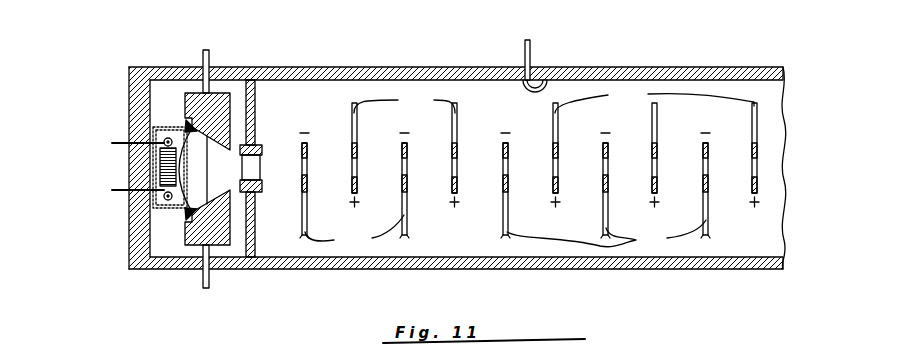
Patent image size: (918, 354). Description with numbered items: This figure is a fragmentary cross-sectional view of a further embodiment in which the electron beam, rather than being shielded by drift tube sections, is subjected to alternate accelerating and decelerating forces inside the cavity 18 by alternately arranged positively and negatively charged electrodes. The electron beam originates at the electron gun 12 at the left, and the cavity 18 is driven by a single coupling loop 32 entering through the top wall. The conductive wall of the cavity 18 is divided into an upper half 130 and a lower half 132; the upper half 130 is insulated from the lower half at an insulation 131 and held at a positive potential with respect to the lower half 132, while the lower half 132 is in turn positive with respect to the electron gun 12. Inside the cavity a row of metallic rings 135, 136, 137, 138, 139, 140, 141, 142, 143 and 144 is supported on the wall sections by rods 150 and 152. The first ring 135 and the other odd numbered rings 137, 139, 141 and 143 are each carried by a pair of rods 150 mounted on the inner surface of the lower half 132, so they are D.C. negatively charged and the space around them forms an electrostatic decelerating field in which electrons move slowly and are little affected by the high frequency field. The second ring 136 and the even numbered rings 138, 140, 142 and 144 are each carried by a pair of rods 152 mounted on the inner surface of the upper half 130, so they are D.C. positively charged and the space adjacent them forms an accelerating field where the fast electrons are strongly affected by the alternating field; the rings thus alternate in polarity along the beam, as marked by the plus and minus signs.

The electron gun 12 is at (457, 167).
The cavity 18 is at (292, 92).
The coupling loop 32 is at (531, 44).
The upper half of the cavity wall 130 is at (440, 72).
The insulation 131 is at (255, 192).
The lower half of the cavity wall 132 is at (301, 269).
The first ring 135 is at (306, 144).
The second ring 136 is at (358, 144).
The ring 137 is at (407, 144).
The ring 138 is at (458, 144).
The ring 139 is at (508, 144).
The ring 140 is at (558, 144).
The ring 141 is at (608, 144).
The ring 142 is at (657, 144).
The ring 143 is at (708, 144).
The ring 144 is at (758, 144).
The rods 150 is at (505, 233).
The rods 152 is at (554, 99).